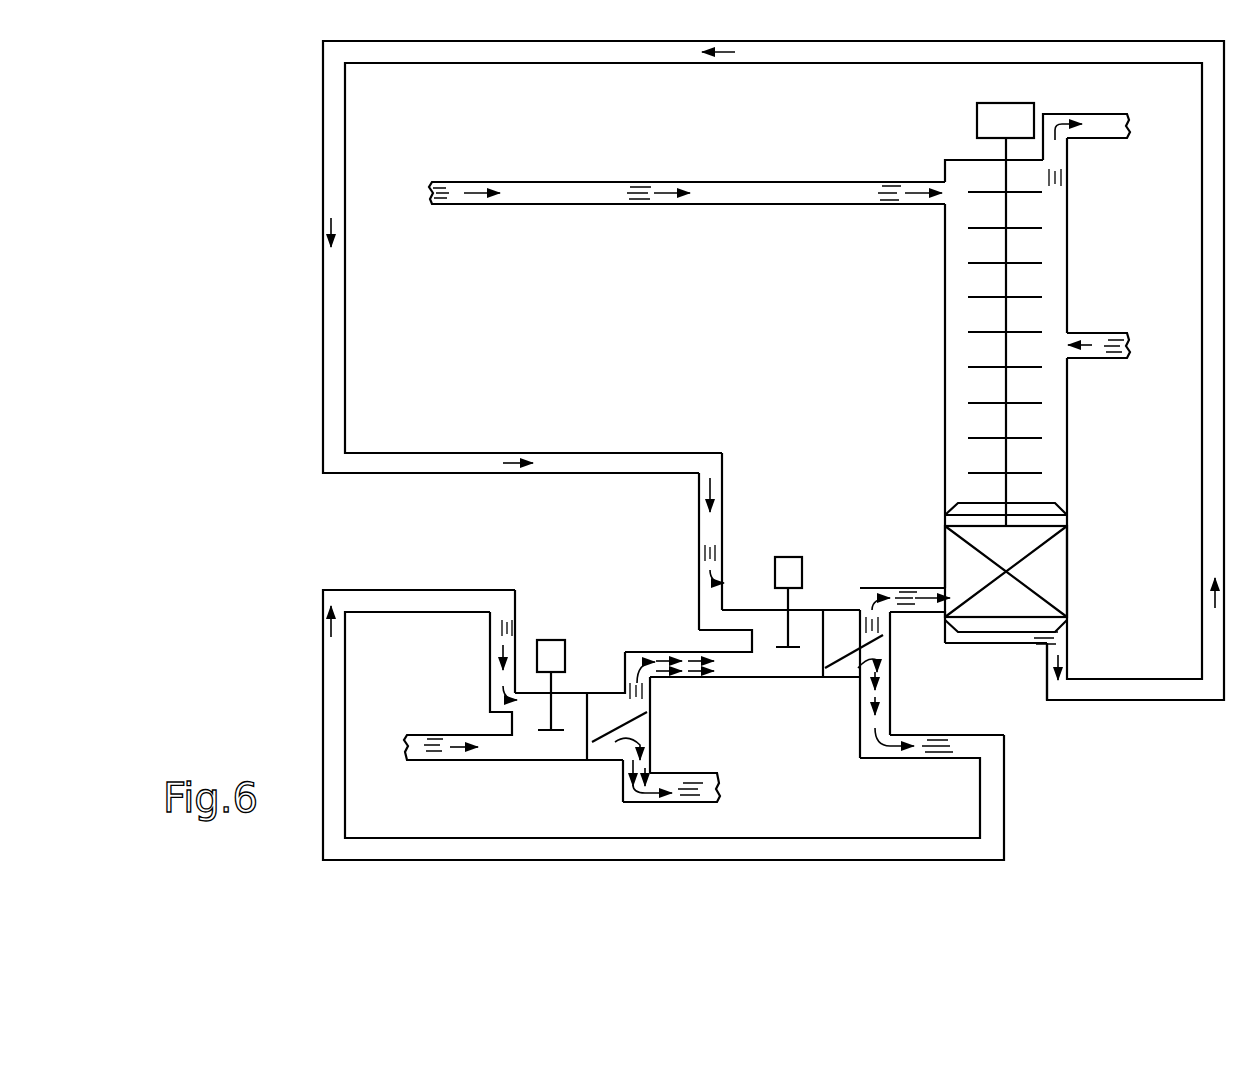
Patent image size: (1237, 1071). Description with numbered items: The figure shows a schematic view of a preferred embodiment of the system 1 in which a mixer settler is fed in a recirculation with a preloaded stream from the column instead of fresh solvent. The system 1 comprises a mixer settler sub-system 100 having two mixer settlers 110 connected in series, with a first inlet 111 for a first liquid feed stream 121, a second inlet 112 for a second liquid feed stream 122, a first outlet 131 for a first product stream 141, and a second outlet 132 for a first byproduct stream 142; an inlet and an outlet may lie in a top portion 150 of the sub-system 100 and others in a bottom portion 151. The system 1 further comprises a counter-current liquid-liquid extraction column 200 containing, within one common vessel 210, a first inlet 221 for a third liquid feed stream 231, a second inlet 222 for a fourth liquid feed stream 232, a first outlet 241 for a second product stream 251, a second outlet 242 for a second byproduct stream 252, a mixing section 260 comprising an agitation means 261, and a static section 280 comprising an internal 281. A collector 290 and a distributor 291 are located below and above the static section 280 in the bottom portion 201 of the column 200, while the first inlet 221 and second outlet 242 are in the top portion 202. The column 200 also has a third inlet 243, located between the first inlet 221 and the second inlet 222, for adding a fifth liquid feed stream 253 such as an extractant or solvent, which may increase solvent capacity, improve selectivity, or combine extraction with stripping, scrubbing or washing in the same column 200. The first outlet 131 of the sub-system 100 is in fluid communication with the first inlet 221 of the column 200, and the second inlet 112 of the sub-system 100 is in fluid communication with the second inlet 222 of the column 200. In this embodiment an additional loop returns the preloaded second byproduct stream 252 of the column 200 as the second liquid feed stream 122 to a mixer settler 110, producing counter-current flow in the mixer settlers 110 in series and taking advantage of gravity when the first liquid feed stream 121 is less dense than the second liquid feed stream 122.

The system 1 is at (766, 157).
The mixer settler sub-system 100 is at (760, 688).
The mixer settler 110 is at (533, 760).
The first inlet 111 is at (512, 748).
The second inlet 112 is at (508, 708).
The first liquid feed stream 121 is at (425, 747).
The second liquid feed stream 122 is at (443, 190).
The first outlet 131 is at (625, 655).
The second outlet 132 is at (643, 758).
The first product stream 141 is at (645, 692).
The first byproduct stream 142 is at (620, 740).
The top portion 150 is at (613, 702).
The bottom portion 151 is at (608, 743).
The counter-current liquid-liquid extraction column 200 is at (972, 156).
The bottom portion 201 is at (943, 495).
The top portion 202 is at (1068, 245).
The common vessel 210 is at (943, 285).
The first inlet 221 is at (948, 597).
The second inlet 222 is at (942, 190).
The third liquid feed stream 231 is at (897, 596).
The fourth liquid feed stream 232 is at (885, 202).
The first outlet 241 is at (1058, 160).
The second outlet 242 is at (1058, 645).
The third inlet 243 is at (1082, 347).
The second product stream 251 is at (1060, 180).
The second byproduct stream 252 is at (1052, 636).
The fifth liquid feed stream 253 is at (1112, 345).
The mixing section 260 is at (1050, 283).
The agitation means 261 is at (968, 403).
The static section 280 is at (1050, 578).
The internal 281 is at (1040, 551).
The collector 290 is at (1007, 634).
The distributor 291 is at (1040, 503).